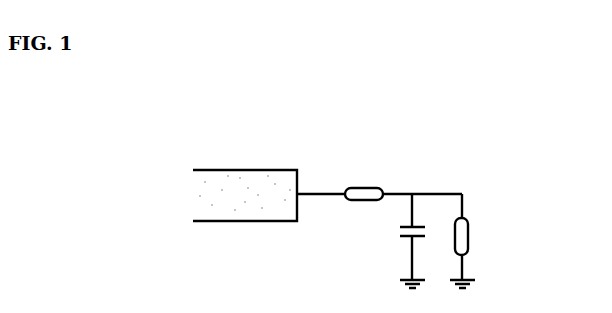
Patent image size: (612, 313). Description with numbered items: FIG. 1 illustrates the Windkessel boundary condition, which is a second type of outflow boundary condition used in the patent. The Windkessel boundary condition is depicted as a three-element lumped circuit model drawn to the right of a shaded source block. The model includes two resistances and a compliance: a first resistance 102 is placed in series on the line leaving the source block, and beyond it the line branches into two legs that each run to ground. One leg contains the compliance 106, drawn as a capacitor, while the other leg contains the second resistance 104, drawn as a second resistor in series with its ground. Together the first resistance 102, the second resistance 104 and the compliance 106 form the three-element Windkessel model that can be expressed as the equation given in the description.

The first resistance 102 is at (380, 188).
The second resistance 104 is at (468, 250).
The compliance 106 is at (412, 240).